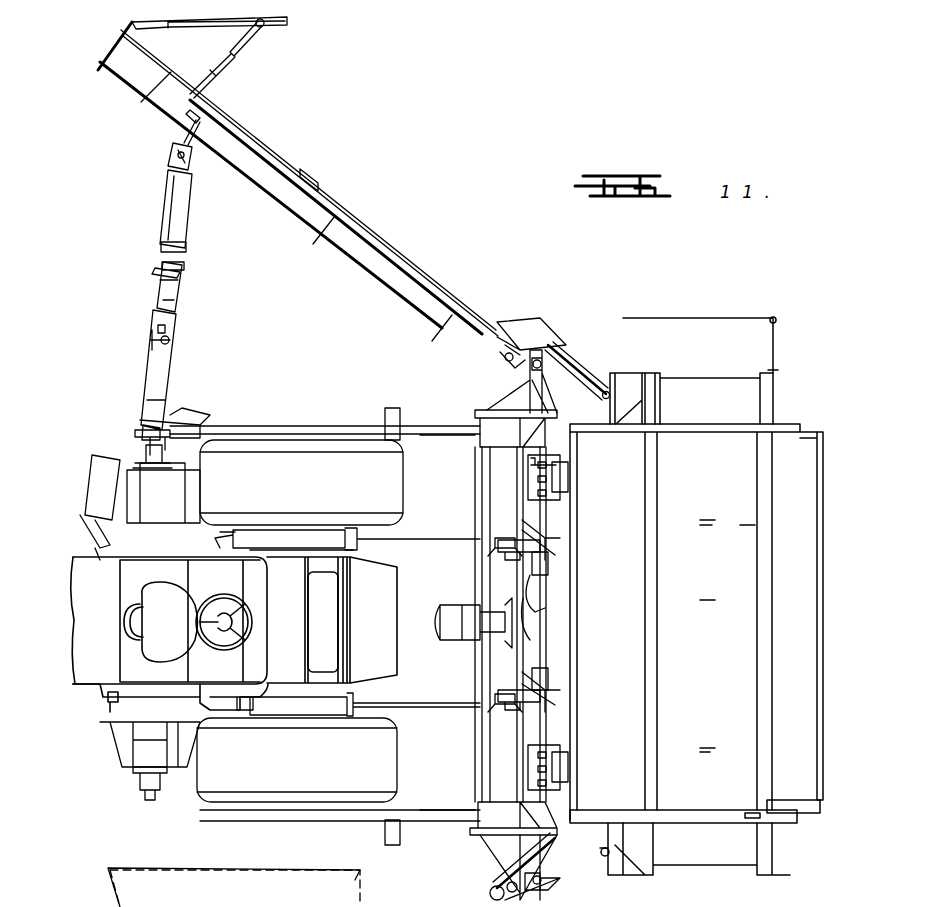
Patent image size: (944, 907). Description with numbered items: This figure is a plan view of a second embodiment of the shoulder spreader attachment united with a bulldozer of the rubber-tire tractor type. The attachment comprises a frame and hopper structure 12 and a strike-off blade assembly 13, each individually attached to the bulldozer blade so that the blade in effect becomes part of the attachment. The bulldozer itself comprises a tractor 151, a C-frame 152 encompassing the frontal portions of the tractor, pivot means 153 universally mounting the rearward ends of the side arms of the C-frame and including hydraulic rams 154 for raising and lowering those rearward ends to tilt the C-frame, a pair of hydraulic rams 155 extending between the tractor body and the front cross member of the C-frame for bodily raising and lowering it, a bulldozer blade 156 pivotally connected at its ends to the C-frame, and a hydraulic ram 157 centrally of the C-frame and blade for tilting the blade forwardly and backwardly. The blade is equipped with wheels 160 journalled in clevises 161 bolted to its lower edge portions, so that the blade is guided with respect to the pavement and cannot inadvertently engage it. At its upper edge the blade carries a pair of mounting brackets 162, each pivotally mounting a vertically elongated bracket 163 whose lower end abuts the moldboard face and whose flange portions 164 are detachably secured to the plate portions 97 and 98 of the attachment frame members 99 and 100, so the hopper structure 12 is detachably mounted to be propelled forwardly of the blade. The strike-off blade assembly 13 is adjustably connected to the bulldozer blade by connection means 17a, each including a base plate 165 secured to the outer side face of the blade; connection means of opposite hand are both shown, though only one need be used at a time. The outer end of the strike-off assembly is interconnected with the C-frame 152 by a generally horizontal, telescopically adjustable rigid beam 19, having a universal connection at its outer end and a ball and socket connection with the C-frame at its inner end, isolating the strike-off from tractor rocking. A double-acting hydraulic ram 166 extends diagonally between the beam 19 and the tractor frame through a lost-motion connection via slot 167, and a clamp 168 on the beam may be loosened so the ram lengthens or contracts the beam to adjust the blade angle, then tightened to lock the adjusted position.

The frame and hopper structure 12 is at (800, 419).
The strike-off blade assembly 13 is at (367, 219).
The connection means 17a is at (480, 372).
The beam 19 is at (186, 225).
The plate portion 97 is at (550, 578).
The plate portion 98 is at (548, 680).
The attachment frame member 99 is at (560, 560).
The attachment frame member 100 is at (555, 690).
The tractor 151 is at (384, 572).
The C-frame 152 is at (315, 430).
The pivot means 153 is at (165, 452).
The hydraulic rams 154 is at (160, 497).
The hydraulic rams 155 is at (300, 535).
The bulldozer blade 156 is at (462, 458).
The hydraulic ram 157 is at (448, 633).
The wheels 160 is at (560, 480).
The clevises 161 is at (540, 462).
The mounting brackets 162 is at (500, 552).
The bracket 163 is at (525, 535).
The flange portions 164 is at (525, 660).
The base plate 165 is at (472, 412).
The hydraulic ram 166 is at (118, 480).
The slot 167 is at (186, 253).
The clamp 168 is at (166, 346).